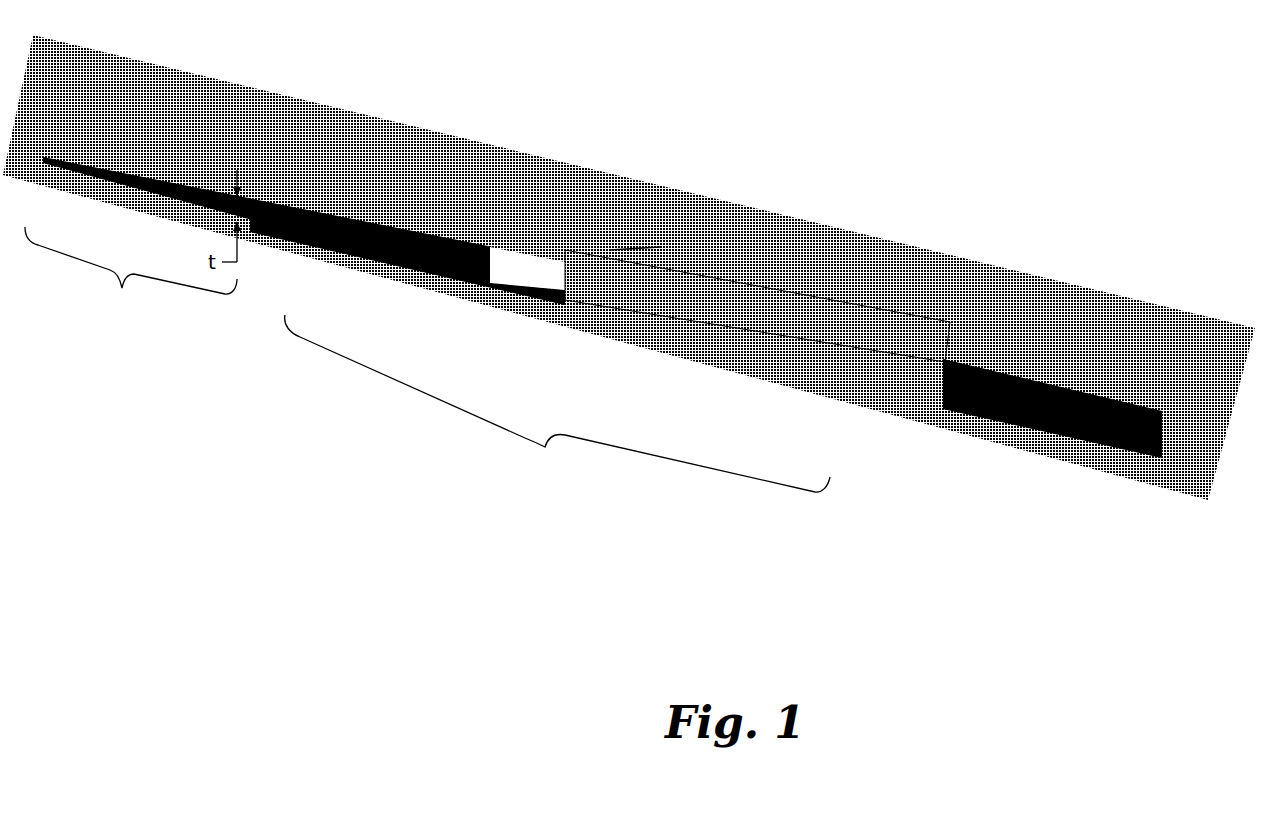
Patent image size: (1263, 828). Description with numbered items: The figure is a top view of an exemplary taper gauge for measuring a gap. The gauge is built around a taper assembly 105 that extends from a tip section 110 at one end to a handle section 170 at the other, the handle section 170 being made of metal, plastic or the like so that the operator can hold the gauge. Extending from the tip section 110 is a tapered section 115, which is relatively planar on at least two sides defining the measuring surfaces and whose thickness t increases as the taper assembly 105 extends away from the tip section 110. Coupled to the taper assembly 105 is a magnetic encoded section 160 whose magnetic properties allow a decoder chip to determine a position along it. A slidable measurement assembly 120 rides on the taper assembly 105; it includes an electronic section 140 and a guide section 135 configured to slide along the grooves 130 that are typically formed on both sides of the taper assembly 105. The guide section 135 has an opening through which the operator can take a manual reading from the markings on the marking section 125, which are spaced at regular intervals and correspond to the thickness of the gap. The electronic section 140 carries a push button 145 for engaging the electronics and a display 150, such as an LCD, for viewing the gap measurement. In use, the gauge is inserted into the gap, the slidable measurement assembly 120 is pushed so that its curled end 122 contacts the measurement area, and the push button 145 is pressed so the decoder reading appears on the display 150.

The taper assembly 105 is at (1077, 428).
The tip section 110 is at (44, 157).
The tapered section 115 is at (131, 275).
The slidable measurement assembly 120 is at (557, 403).
The curled end 122 is at (250, 207).
The marking section 125 is at (402, 229).
The grooves 130 is at (440, 265).
The guide section 135 is at (542, 253).
The electronic section 140 is at (852, 248).
The push button 145 is at (655, 263).
The display 150 is at (647, 248).
The magnetic encoded section 160 is at (1023, 398).
The handle section 170 is at (1107, 400).